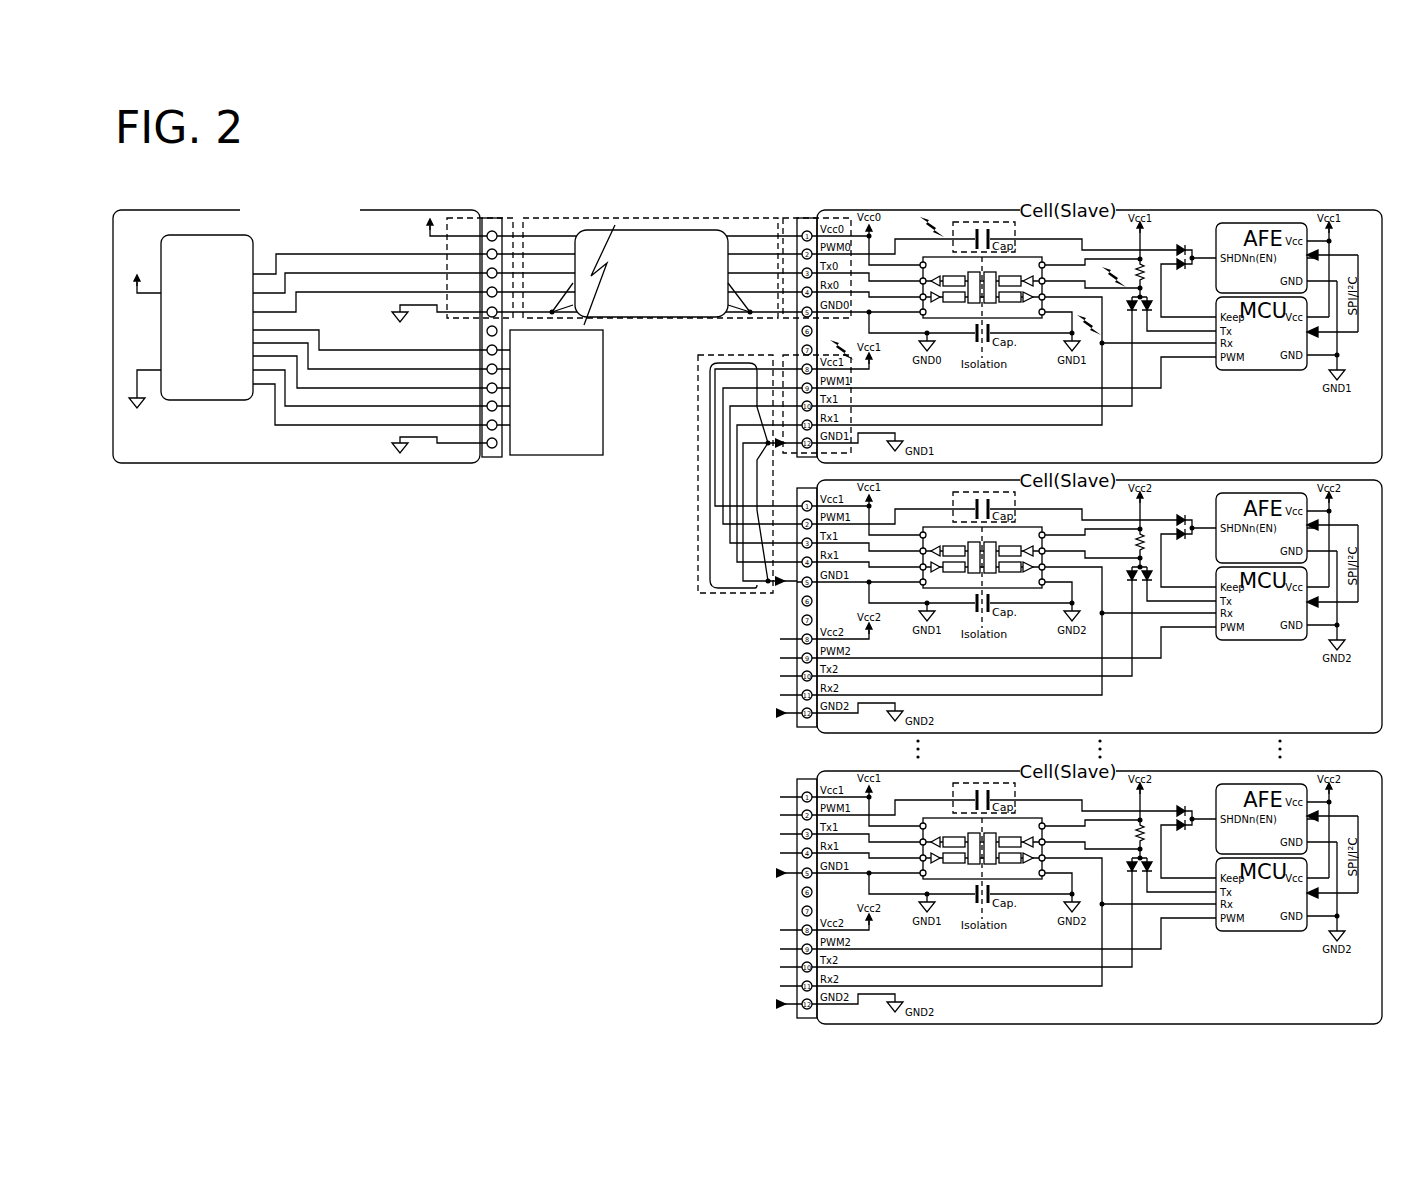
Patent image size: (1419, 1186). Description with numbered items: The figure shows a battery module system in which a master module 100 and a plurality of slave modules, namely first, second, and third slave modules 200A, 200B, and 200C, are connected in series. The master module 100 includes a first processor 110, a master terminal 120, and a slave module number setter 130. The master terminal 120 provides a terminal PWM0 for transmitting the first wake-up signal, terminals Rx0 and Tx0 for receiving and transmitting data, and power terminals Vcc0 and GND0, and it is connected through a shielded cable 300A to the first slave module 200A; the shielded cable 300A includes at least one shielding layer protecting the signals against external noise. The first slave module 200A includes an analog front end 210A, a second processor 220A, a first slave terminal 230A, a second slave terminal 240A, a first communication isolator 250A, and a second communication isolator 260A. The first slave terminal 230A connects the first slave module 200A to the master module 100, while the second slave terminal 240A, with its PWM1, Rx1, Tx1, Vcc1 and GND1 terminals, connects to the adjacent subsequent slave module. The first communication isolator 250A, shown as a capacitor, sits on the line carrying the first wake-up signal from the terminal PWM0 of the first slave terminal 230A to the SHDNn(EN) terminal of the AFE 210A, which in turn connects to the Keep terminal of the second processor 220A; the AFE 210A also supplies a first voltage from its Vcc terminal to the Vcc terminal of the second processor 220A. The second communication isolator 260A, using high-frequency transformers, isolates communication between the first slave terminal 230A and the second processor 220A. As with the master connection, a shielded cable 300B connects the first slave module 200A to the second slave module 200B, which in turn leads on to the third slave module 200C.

The master module 100 is at (186, 210).
The first processor 110 is at (207, 400).
The master terminal 120 is at (502, 216).
The slave module number setter 130 is at (573, 458).
The shielded cable 300A is at (661, 216).
The first slave terminal 230A is at (800, 216).
The second slave terminal 240A is at (788, 355).
The shielded cable 300B is at (698, 592).
The second communication isolator 260A is at (914, 248).
The first communication isolator 250A is at (968, 221).
The analog front end (AFE) 210A is at (1283, 222).
The second processor 220A is at (1270, 372).
The first slave module 200A is at (1364, 210).
The second slave module 200B is at (793, 613).
The third slave module 200C is at (793, 906).